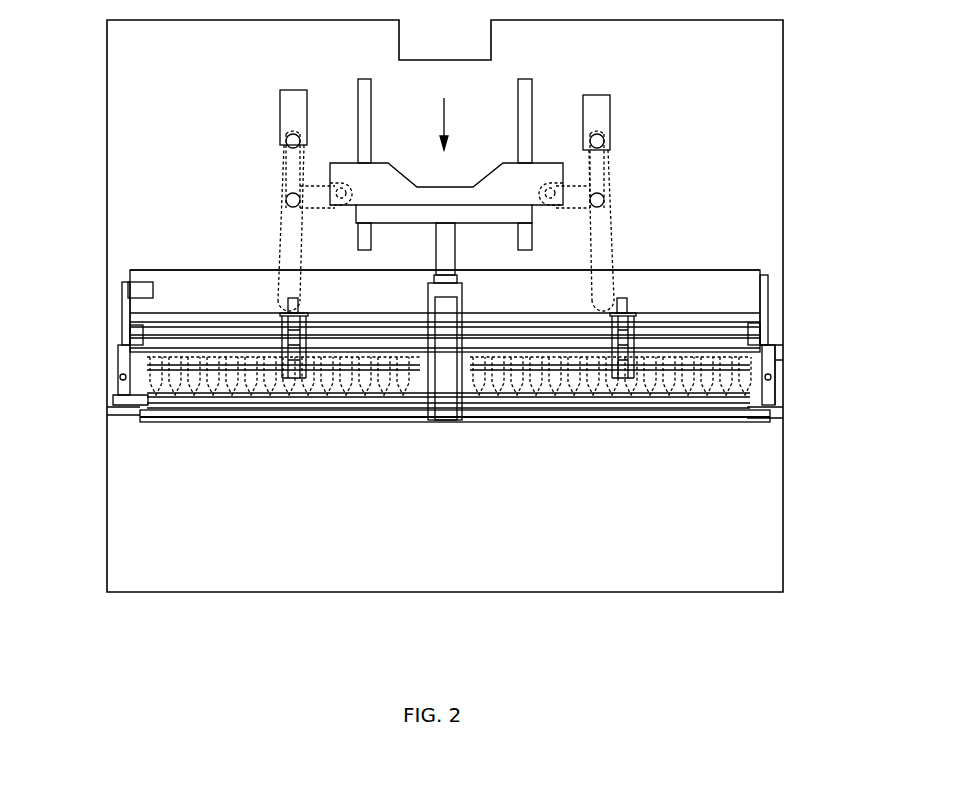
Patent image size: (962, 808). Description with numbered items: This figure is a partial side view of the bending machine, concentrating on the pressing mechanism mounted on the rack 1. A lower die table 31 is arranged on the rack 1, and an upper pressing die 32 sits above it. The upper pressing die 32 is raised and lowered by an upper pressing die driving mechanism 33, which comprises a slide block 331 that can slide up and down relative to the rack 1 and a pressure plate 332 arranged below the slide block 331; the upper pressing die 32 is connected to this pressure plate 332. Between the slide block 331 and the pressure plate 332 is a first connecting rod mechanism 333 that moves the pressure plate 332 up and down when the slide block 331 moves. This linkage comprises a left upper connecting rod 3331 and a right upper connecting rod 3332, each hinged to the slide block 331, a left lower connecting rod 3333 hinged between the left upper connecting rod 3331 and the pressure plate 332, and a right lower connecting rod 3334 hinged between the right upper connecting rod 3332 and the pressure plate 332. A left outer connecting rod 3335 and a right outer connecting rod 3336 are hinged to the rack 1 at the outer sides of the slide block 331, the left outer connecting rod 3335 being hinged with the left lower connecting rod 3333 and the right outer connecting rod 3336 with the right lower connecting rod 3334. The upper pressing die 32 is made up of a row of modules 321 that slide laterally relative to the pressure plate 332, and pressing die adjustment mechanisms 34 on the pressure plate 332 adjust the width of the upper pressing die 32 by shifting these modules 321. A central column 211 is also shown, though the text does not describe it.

The rack 1 is at (765, 192).
The center column 211 is at (442, 355).
The lower die table 31 is at (185, 405).
The upper pressing die 32 is at (140, 405).
The modules 321 is at (360, 383).
The upper pressing die driving mechanism 33 is at (268, 263).
The slide block 331 is at (383, 187).
The pressure plate 332 is at (180, 298).
The first connecting rod mechanism 333 is at (318, 160).
The left upper connecting rod 3331 is at (327, 190).
The right upper connecting rod 3332 is at (567, 188).
The left lower connecting rod 3333 is at (292, 242).
The right lower connecting rod 3334 is at (598, 255).
The left outer connecting rod 3335 is at (292, 166).
The right outer connecting rod 3336 is at (600, 178).
The pressing die adjustment mechanism 34 is at (292, 378).